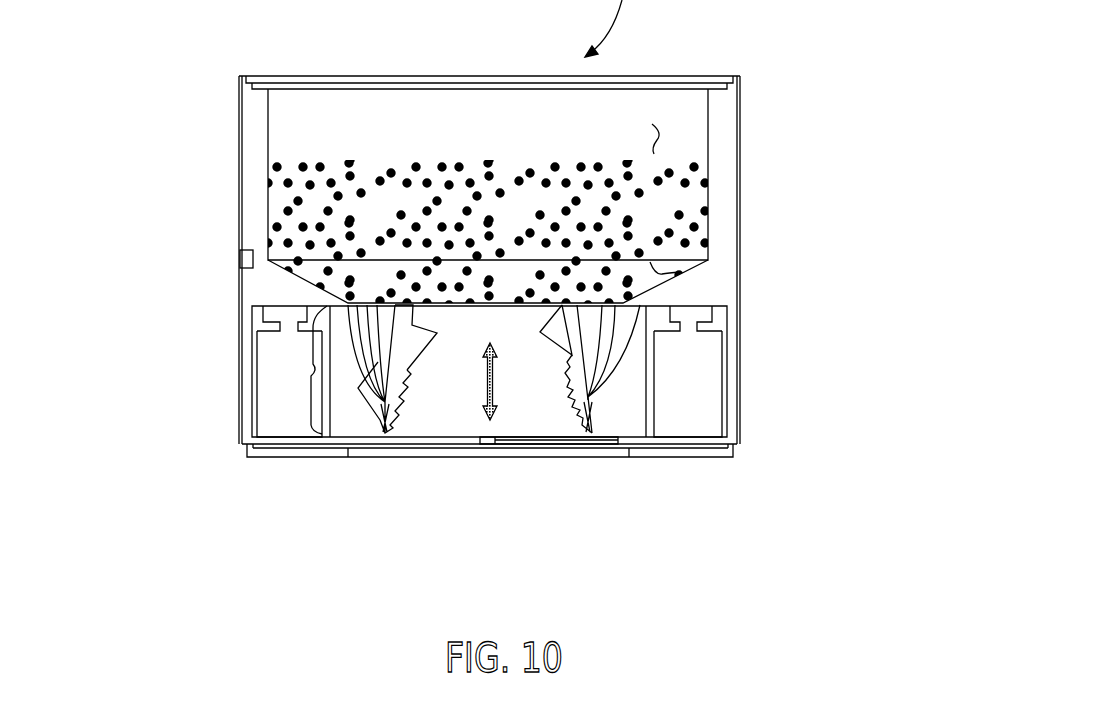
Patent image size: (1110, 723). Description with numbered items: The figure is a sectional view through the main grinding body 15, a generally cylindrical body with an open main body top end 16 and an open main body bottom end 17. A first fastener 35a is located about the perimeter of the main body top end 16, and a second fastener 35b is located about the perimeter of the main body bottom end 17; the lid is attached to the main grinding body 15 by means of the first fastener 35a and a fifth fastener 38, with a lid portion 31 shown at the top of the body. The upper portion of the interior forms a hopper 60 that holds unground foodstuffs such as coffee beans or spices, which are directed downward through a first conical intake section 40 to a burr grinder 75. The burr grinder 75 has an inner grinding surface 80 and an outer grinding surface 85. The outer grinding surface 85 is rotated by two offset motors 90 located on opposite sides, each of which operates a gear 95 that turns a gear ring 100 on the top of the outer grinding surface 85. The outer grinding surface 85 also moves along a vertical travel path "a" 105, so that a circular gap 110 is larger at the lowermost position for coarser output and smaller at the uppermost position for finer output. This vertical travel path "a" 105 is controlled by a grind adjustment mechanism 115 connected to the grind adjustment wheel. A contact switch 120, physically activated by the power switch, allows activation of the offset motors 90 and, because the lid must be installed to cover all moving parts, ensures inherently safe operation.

The main grinding body 15 is at (205, 191).
The main body top end 16 is at (300, 108).
The main body bottom end 17 is at (648, 458).
The lid 31 is at (647, 83).
The first fastener 35a is at (727, 88).
The second fastener 35b is at (247, 457).
The fifth fastener 38 is at (735, 77).
The first conical intake section 40 is at (293, 268).
The hopper 60 is at (658, 140).
The burr grinder 75 is at (300, 372).
The inner grinding surface 80 is at (447, 387).
The outer grinding surface 85 is at (347, 422).
The offset motors 90 is at (283, 422).
The gear 95 is at (270, 313).
The gear ring 100 is at (660, 310).
The vertical travel path "a" 105 is at (490, 420).
The circular gap 110 is at (385, 436).
The grind adjustment mechanism 115 is at (567, 445).
The contact switch 120 is at (243, 263).